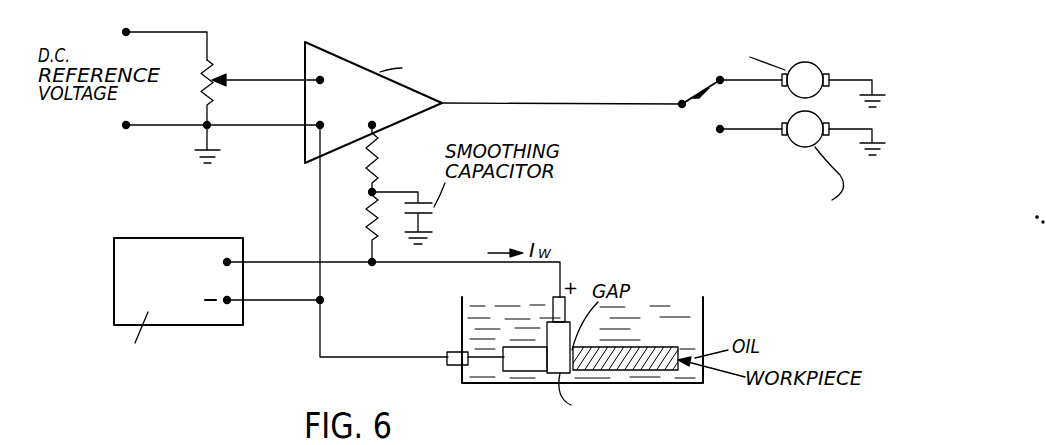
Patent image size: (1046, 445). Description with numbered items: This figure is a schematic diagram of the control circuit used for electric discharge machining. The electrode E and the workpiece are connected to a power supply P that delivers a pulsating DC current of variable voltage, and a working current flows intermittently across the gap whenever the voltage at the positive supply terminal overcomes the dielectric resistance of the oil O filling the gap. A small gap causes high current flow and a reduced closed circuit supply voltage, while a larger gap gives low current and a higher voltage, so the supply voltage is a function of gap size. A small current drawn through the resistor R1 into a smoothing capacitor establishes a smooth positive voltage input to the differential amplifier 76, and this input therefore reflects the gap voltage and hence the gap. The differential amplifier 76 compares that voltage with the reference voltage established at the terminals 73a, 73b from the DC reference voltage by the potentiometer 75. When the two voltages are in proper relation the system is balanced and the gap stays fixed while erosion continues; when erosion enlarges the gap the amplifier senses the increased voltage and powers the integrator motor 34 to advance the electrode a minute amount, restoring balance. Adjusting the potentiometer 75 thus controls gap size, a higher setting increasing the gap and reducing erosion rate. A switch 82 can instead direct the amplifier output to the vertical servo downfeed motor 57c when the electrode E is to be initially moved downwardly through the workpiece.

The terminal 73a is at (126, 32).
The terminal 73b is at (126, 125).
The potentiometer 75 is at (216, 72).
The differential amplifier 76 is at (305, 155).
The switch 82 is at (682, 101).
The variable speed motor 34 is at (810, 72).
The motor 57c is at (790, 140).
The resistor R1 is at (353, 194).
The power supply P is at (152, 248).
The oil O is at (707, 324).
The electrode E is at (550, 360).